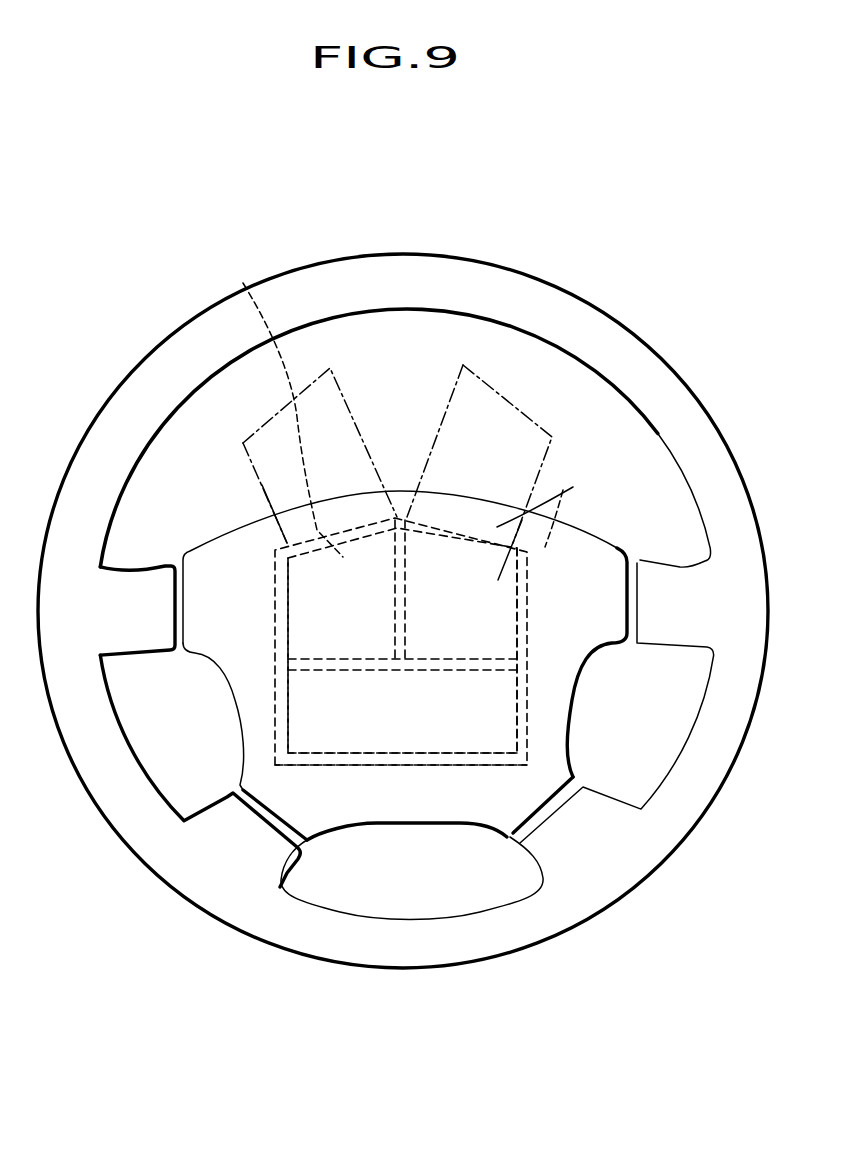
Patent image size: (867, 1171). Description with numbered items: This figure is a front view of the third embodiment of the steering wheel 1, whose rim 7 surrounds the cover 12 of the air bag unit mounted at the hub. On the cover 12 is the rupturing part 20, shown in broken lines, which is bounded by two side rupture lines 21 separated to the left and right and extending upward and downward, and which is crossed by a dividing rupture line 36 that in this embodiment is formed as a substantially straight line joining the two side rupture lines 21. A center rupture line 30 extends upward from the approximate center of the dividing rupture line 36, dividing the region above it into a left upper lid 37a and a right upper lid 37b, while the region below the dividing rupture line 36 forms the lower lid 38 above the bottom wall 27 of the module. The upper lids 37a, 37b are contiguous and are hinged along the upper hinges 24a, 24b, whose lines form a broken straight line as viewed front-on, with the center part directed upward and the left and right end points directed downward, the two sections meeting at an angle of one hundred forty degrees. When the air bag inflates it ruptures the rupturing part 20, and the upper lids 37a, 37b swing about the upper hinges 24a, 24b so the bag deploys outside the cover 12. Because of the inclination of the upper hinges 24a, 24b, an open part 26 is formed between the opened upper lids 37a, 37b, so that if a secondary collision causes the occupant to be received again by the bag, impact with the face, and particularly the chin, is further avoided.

The steering wheel 1 is at (616, 282).
The rim 7 is at (497, 277).
The cover 12 is at (228, 522).
The rupturing part 20 is at (537, 601).
The side rupture lines 21 is at (273, 596).
The upper hinge 24a is at (358, 543).
The upper hinge 24b is at (453, 543).
The open part 26 is at (450, 392).
The bottom wall 27 is at (377, 756).
The center rupture line 30 is at (403, 517).
The dividing rupture line 36 is at (325, 662).
The upper lid 37a is at (268, 443).
The upper lid 37b is at (555, 499).
The lower lid 38 is at (458, 722).